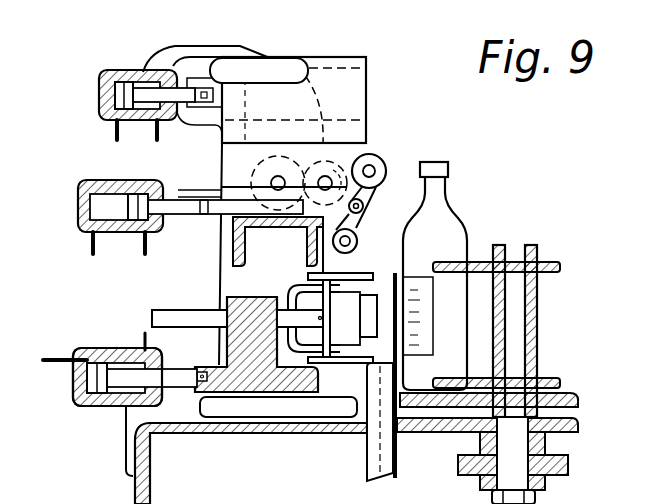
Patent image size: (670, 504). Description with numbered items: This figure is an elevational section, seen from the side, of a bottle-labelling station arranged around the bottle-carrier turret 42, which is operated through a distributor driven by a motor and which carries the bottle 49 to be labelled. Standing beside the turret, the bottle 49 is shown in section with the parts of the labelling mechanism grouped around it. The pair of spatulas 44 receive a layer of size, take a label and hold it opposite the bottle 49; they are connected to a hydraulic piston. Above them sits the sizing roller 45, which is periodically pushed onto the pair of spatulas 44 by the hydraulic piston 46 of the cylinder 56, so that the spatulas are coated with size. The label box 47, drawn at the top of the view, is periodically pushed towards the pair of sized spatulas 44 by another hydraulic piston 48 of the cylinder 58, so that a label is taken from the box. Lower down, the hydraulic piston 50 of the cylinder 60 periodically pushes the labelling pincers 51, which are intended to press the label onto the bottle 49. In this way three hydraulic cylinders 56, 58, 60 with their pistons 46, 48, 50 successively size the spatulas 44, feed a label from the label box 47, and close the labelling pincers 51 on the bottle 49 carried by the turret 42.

The bottle-carrier turret 42 is at (535, 358).
The pair of spatulas 44 is at (396, 273).
The sizing roller 45 is at (386, 152).
The hydraulic piston 46 is at (137, 205).
The label box 47 is at (354, 83).
The hydraulic piston 48 is at (126, 92).
The bottle 49 is at (450, 225).
The hydraulic piston 50 is at (100, 363).
The labelling pincers 51 is at (371, 290).
The cylinder 56 is at (80, 190).
The cylinder 58 is at (103, 70).
The cylinder 60 is at (78, 392).